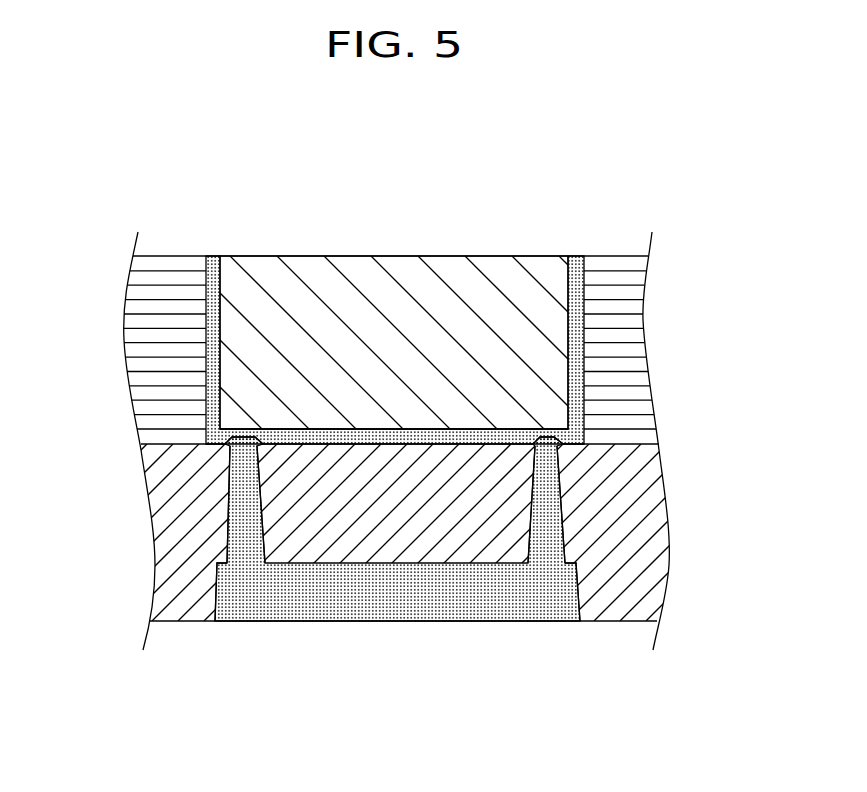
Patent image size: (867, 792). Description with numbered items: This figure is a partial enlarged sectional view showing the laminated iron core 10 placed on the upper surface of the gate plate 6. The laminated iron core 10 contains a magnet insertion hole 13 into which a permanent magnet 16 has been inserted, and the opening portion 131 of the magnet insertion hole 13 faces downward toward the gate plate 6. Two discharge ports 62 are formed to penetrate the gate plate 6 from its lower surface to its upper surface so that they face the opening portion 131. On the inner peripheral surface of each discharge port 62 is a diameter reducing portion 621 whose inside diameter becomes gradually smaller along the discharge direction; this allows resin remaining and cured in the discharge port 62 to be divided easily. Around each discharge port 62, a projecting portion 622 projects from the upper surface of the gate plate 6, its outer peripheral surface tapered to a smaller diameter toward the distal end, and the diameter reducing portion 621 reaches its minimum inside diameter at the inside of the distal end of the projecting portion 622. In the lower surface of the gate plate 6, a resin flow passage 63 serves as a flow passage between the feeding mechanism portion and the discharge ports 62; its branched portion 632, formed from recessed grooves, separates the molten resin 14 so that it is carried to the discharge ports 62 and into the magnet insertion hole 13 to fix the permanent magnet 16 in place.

The laminated iron core 10 is at (173, 254).
The gate plate 6 is at (173, 623).
The permanent magnet 16 is at (368, 282).
The magnet insertion hole 13 is at (583, 352).
The opening portion 131 is at (397, 426).
The resin flow passage 63 is at (403, 620).
The branched portion 632 is at (214, 592).
The molten resin 14 is at (538, 605).
The discharge port 62 is at (245, 438).
The projecting portion 622 is at (232, 442).
The diameter reducing portion 621 is at (232, 472).